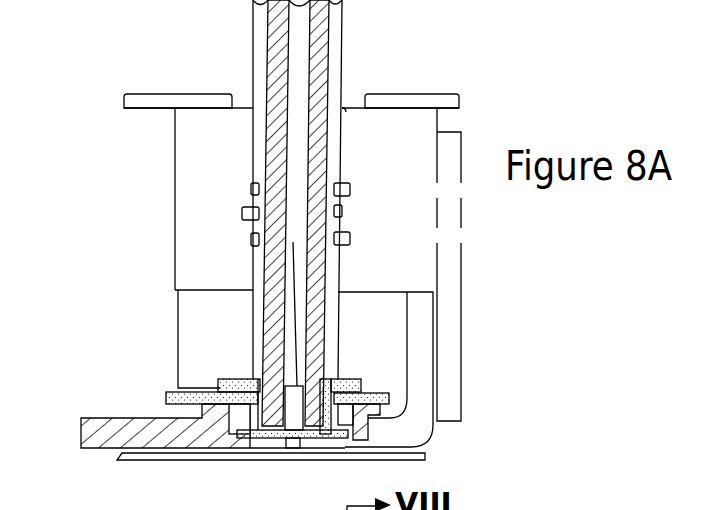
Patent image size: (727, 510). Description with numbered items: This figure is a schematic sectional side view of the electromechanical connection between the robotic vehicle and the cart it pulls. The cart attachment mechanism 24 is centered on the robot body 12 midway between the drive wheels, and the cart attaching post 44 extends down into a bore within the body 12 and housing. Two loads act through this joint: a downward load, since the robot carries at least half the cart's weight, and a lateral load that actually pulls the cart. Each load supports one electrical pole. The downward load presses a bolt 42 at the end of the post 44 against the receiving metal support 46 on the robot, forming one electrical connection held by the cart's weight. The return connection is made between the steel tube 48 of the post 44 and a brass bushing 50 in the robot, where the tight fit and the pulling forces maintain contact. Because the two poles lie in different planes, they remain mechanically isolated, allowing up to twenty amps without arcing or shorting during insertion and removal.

The body 12 is at (171, 303).
The cart attachment mechanism 24 is at (228, 153).
The bolt 42 is at (273, 438).
The cart attaching post 44 is at (371, 70).
The receiving metal support 46 is at (321, 445).
The steel tube 48 is at (266, 172).
The brass bushing 50 is at (220, 380).